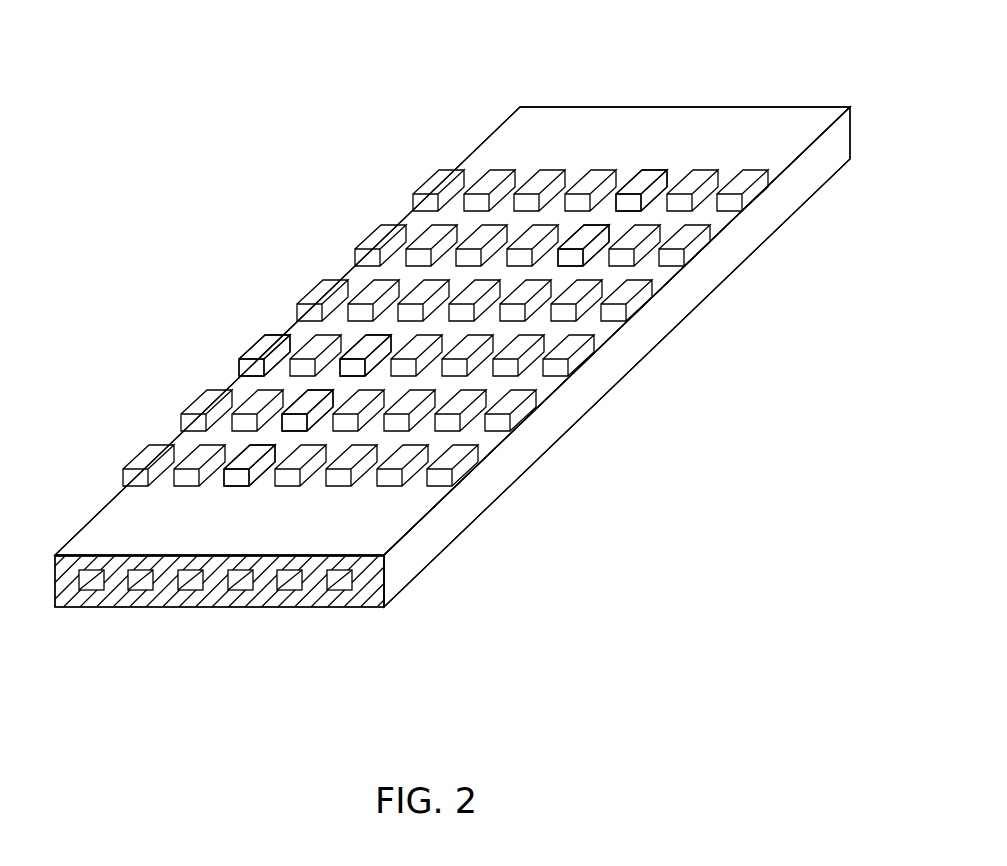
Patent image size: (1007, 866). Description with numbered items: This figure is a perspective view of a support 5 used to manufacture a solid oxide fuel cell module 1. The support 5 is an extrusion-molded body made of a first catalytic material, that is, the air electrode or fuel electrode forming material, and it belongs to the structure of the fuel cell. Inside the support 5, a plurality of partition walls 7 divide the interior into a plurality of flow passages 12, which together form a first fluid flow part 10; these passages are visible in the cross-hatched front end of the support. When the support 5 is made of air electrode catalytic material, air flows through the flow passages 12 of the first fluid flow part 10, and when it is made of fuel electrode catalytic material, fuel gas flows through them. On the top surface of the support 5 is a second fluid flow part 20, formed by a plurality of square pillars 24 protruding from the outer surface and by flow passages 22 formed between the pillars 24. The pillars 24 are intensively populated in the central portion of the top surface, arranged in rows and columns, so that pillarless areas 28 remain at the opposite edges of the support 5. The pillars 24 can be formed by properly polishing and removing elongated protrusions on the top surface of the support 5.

The solid oxide fuel cell module 1 is at (582, 500).
The support 5 is at (592, 390).
The partition walls 7 is at (312, 582).
The first fluid flow part 10 is at (122, 620).
The flow passages 12 is at (193, 590).
The second fluid flow part 20 is at (422, 165).
The flow passages 22 is at (562, 272).
The pillars 24 is at (367, 348).
The pillarless areas 28 is at (650, 120).